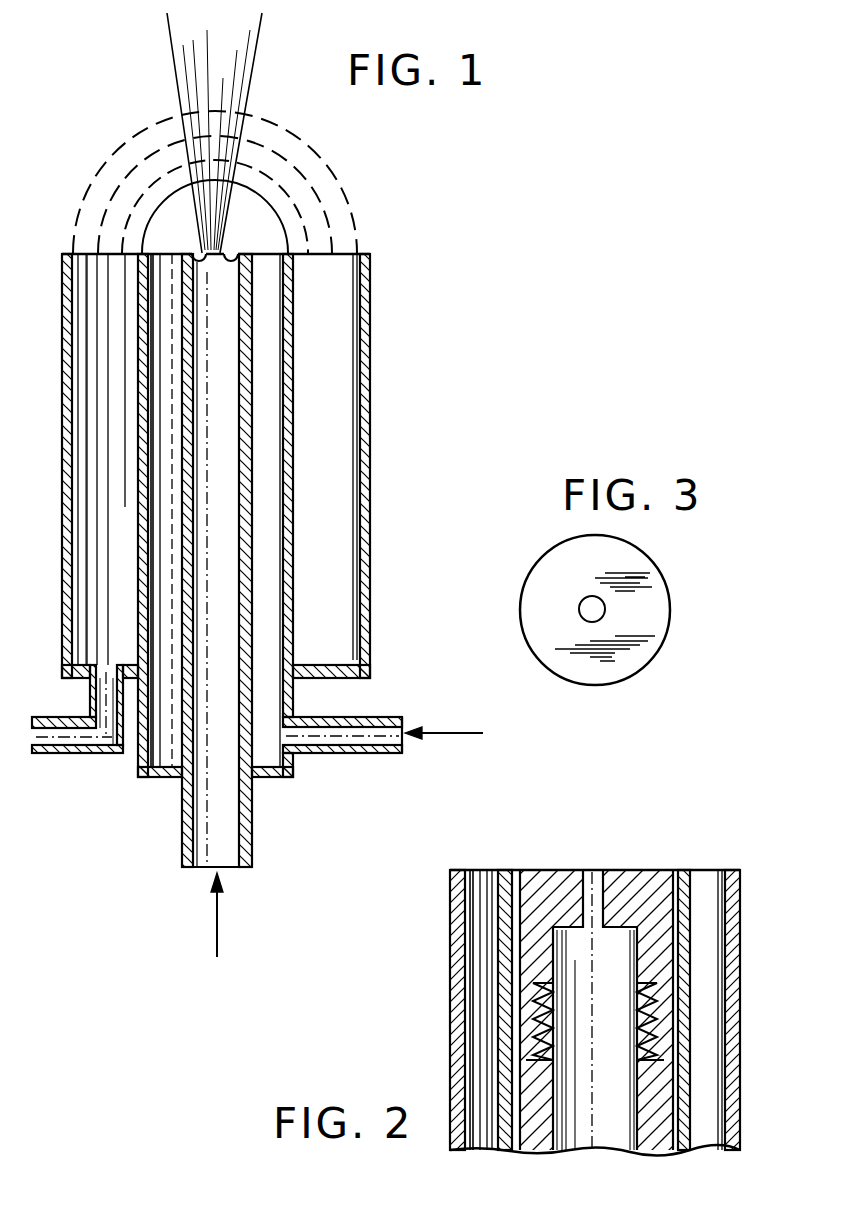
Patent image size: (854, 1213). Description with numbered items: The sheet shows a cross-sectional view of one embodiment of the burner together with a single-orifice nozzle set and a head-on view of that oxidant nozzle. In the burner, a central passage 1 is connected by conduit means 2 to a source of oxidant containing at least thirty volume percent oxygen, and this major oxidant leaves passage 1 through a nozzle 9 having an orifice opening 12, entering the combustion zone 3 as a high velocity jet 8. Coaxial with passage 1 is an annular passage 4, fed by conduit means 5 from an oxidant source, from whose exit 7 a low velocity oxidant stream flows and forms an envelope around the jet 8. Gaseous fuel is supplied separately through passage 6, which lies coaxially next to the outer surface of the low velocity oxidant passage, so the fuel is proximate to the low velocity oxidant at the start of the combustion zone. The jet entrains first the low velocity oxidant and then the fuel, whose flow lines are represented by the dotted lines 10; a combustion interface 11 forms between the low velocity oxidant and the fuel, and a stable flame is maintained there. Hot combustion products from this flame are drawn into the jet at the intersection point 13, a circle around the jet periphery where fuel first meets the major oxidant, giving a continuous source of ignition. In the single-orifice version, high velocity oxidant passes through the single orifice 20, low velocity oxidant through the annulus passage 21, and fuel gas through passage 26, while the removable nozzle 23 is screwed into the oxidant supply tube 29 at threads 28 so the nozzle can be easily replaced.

In FIG. 1, the passage 1 is at (221, 352).
In FIG. 1, the conduit means 2 is at (218, 940).
In FIG. 1, the combustion zone 3 is at (215, 172).
In FIG. 1, the annular passage 4 is at (275, 393).
In FIG. 1, the conduit means 5 is at (457, 732).
In FIG. 1, the passage 6 is at (85, 373).
In FIG. 1, the exit 7 is at (167, 251).
In FIG. 1, the high velocity jet 8 is at (258, 62).
In FIG. 1, the nozzle 9 is at (195, 253).
In FIG. 1, the dotted lines 10 is at (113, 153).
In FIG. 1, the combustion interface 11 is at (158, 205).
In FIG. 1, the orifice opening 12 is at (222, 251).
In FIG. 1, the intersection point 13 is at (190, 182).
In FIG. 3, the single orifice 20 is at (591, 602).
In FIG. 2, the single orifice 20 is at (592, 878).
In FIG. 2, the annulus passage 21 is at (671, 877).
In FIG. 2, the nozzle 23 is at (536, 885).
In FIG. 2, the passage 26 is at (710, 938).
In FIG. 2, the threads 28 is at (653, 1045).
In FIG. 2, the oxidant supply tube 29 is at (650, 1137).